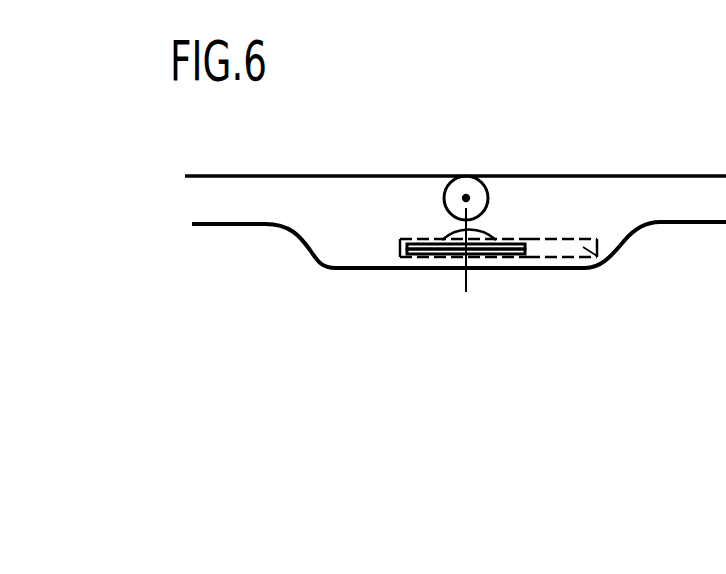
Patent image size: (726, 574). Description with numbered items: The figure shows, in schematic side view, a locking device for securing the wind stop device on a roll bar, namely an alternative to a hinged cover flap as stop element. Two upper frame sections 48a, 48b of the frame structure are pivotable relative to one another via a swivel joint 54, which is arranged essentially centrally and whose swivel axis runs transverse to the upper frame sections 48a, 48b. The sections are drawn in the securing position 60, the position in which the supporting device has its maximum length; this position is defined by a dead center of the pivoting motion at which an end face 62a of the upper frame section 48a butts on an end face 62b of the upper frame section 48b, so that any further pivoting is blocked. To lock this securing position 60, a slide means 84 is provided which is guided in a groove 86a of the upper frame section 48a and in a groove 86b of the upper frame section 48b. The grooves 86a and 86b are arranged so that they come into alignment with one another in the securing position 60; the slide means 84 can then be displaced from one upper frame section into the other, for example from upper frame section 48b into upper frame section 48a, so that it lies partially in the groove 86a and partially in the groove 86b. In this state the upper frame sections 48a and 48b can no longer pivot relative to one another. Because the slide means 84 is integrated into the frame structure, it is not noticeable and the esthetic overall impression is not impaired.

The upper frame section 48a is at (320, 203).
The upper frame section 48b is at (658, 193).
The securing position 60 is at (540, 163).
The swivel joint 54 is at (458, 186).
The groove 86a is at (408, 253).
The groove 86b is at (603, 258).
The end face 62a is at (445, 255).
The end face 62b is at (512, 253).
The slide means 84 is at (489, 258).